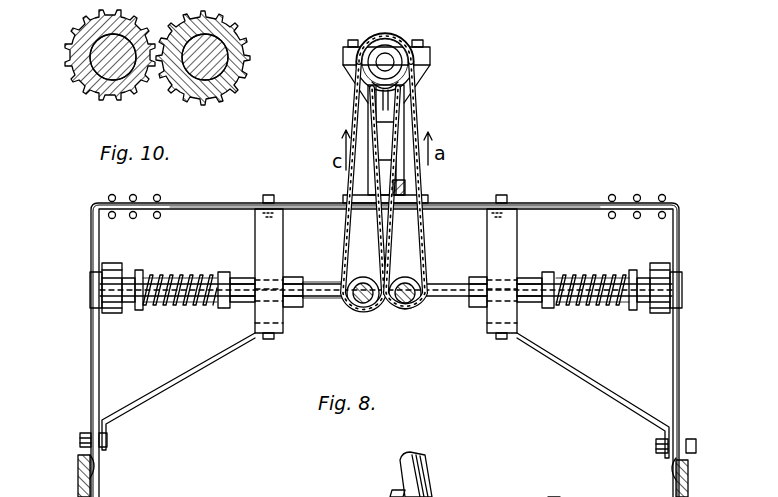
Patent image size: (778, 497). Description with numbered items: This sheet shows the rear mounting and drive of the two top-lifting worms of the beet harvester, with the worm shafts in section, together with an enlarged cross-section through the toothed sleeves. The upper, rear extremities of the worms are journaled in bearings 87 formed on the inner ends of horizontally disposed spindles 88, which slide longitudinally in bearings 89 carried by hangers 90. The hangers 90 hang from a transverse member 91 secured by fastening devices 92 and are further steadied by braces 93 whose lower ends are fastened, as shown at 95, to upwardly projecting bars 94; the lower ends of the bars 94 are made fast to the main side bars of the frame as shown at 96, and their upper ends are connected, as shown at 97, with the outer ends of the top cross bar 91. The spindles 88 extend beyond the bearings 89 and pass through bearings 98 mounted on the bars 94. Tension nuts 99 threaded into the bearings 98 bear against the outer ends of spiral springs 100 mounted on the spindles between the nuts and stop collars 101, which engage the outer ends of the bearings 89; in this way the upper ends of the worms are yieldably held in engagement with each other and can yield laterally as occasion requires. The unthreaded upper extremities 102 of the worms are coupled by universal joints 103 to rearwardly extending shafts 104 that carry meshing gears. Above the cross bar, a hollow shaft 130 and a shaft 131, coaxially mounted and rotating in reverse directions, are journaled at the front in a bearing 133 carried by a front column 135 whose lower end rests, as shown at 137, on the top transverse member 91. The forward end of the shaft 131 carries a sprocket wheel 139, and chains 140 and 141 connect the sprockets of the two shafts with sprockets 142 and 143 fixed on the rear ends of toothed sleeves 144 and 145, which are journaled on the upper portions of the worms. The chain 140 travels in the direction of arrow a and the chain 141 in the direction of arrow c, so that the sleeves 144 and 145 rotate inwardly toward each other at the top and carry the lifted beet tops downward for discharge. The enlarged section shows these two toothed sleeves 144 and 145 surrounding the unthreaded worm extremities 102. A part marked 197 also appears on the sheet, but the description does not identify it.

In FIG. 8, the bearings 87 is at (343, 300).
In FIG. 8, the spindles 88 is at (300, 278).
In FIG. 8, the bearings 89 is at (292, 308).
In FIG. 8, the hangers 90 is at (256, 241).
In FIG. 8, the transverse member 91 is at (578, 203).
In FIG. 8, the fastening devices 92 is at (264, 197).
In FIG. 8, the braces 93 is at (200, 368).
In FIG. 8, the upwardly projecting bars 94 is at (100, 380).
In FIG. 8, the brace connection 95 is at (108, 442).
In FIG. 8, the bar fastening 96 is at (698, 482).
In FIG. 8, the bar connection 97 is at (150, 196).
In FIG. 8, the bearings 98 is at (110, 264).
In FIG. 8, the tension nuts 99 is at (141, 272).
In FIG. 8, the spiral springs 100 is at (185, 275).
In FIG. 8, the stop collars 101 is at (225, 272).
In FIG. 10, the upper and rear extremities of the worms 102 is at (85, 86).
In FIG. 8, the universal joints 103 is at (442, 488).
In FIG. 8, the rearwardly extending shafts 104 is at (428, 468).
In FIG. 8, the hollow shaft 130 is at (385, 52).
In FIG. 8, the shaft 131 is at (402, 46).
In FIG. 8, the bearing 133 is at (430, 56).
In FIG. 8, the front column 135 is at (416, 127).
In FIG. 8, the column support 137 is at (420, 180).
In FIG. 8, the sprocket wheel 139 is at (383, 85).
In FIG. 8, the chain 140 is at (420, 140).
In FIG. 8, the chain 141 is at (355, 124).
In FIG. 8, the sprocket 142 is at (410, 278).
In FIG. 8, the sprocket 143 is at (358, 278).
In FIG. 10, the toothed sleeve 144 is at (240, 67).
In FIG. 8, the toothed sleeve 144 is at (420, 312).
In FIG. 10, the toothed sleeve 145 is at (74, 65).
In FIG. 8, the toothed sleeve 145 is at (355, 315).
In FIG. 8, the member 197 is at (567, 488).